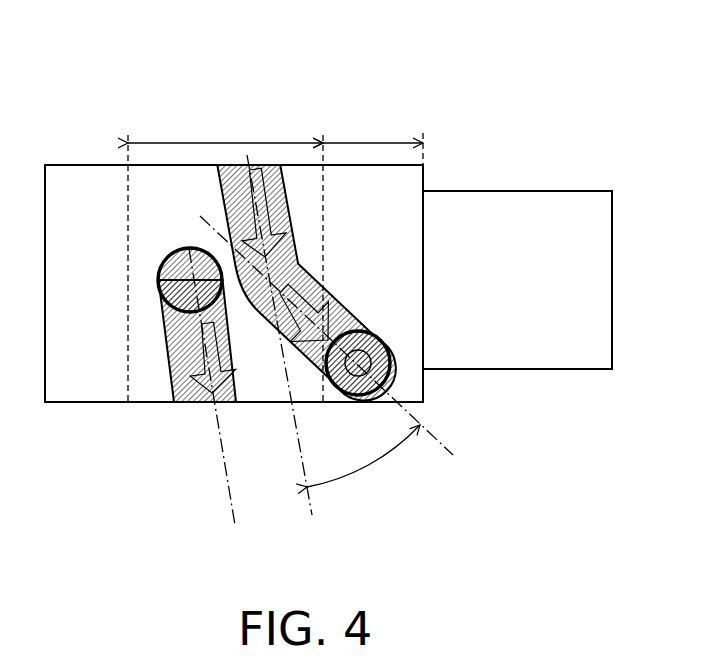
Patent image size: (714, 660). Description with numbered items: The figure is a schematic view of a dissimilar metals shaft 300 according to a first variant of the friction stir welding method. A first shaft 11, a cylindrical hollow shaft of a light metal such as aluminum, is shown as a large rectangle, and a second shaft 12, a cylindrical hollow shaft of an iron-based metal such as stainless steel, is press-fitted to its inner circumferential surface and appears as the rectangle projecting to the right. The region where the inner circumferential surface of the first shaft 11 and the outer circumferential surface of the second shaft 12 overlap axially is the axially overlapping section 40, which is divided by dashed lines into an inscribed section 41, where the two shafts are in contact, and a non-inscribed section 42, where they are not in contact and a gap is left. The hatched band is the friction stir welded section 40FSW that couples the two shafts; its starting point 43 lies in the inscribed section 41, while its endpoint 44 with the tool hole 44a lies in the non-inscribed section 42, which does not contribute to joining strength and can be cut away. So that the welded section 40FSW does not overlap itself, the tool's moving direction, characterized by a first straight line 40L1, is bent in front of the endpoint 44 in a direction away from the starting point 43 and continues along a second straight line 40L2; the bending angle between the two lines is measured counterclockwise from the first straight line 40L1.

The first shaft 11 is at (86, 160).
The second shaft 12 is at (503, 188).
The dissimilar metals shaft 300 is at (328, 93).
The axially overlapping section 40 is at (418, 114).
The inscribed section 41 is at (225, 260).
The non-inscribed section 42 is at (373, 141).
The starting point 43 is at (187, 243).
The endpoint 44 is at (376, 338).
The tool hole 44a is at (352, 394).
The friction stir welded section 40FSW is at (163, 377).
The first straight line 40L1 is at (215, 432).
The second straight line 40L2 is at (443, 443).